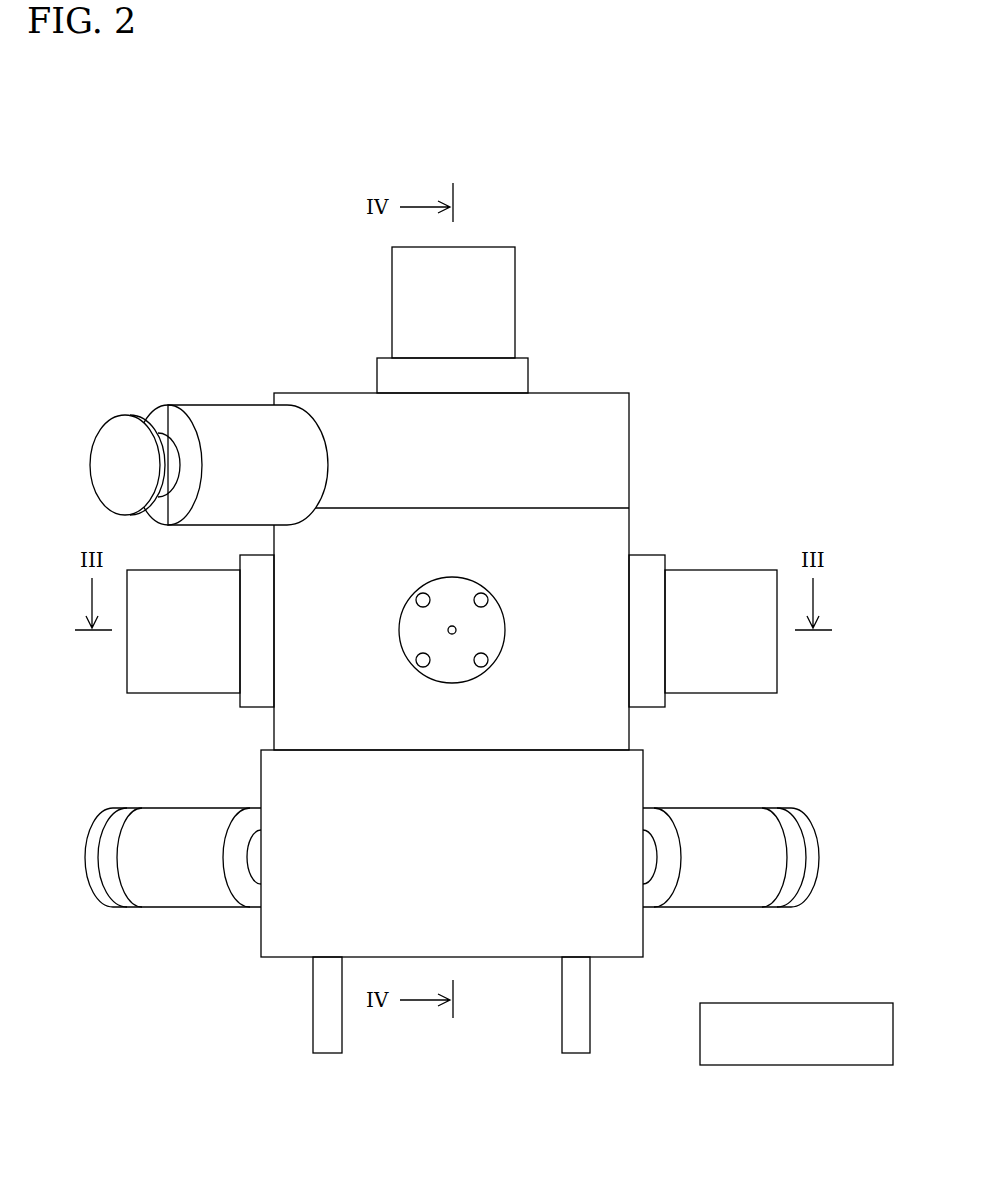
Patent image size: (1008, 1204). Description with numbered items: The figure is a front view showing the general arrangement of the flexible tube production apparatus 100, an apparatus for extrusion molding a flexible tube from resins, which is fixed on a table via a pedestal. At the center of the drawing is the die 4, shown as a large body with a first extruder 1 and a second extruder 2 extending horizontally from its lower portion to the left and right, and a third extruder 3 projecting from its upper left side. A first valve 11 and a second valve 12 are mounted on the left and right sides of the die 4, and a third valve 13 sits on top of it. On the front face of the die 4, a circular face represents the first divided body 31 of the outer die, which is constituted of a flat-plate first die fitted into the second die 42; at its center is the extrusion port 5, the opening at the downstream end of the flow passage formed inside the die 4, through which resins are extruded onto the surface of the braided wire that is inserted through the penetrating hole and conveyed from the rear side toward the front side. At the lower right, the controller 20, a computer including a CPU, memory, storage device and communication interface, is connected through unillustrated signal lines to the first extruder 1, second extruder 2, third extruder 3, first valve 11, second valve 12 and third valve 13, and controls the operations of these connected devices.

The flexible tube production apparatus 100 is at (162, 213).
The first extruder 1 is at (96, 827).
The second extruder 2 is at (819, 830).
The third extruder 3 is at (168, 405).
The die 4 is at (629, 526).
The extrusion port 5 is at (462, 633).
The first valve 11 is at (127, 687).
The second valve 12 is at (778, 687).
The third valve 13 is at (515, 247).
The controller 20 is at (858, 1003).
The first divided body 31 is at (558, 607).
The second die 42 is at (490, 617).